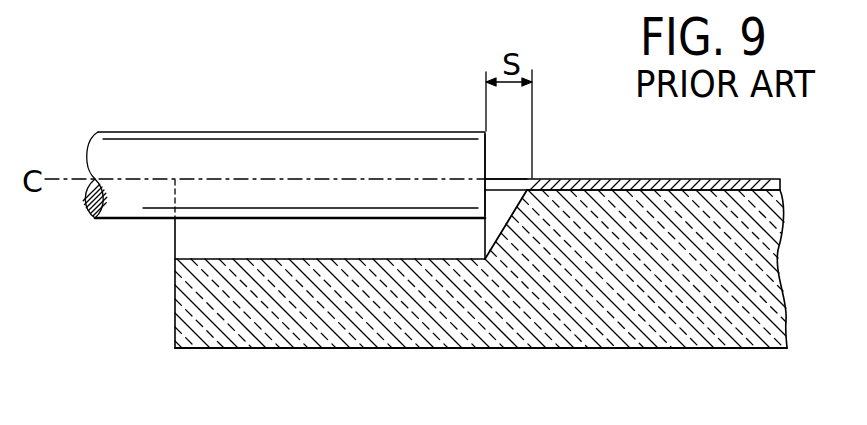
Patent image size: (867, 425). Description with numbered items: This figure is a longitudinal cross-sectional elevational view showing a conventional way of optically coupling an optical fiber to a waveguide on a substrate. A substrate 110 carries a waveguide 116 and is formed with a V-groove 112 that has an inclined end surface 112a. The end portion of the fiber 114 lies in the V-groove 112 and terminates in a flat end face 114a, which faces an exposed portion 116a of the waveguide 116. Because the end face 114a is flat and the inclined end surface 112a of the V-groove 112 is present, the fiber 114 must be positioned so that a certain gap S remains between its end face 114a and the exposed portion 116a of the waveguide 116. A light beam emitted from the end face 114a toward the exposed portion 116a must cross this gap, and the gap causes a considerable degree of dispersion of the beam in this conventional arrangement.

The substrate 110 is at (597, 348).
The V-groove 112 is at (201, 258).
The inclined end surface 112a is at (506, 224).
The fiber 114 is at (168, 142).
The end face 114a is at (486, 158).
The waveguide 116 is at (736, 186).
The exposed portion 116a is at (526, 178).